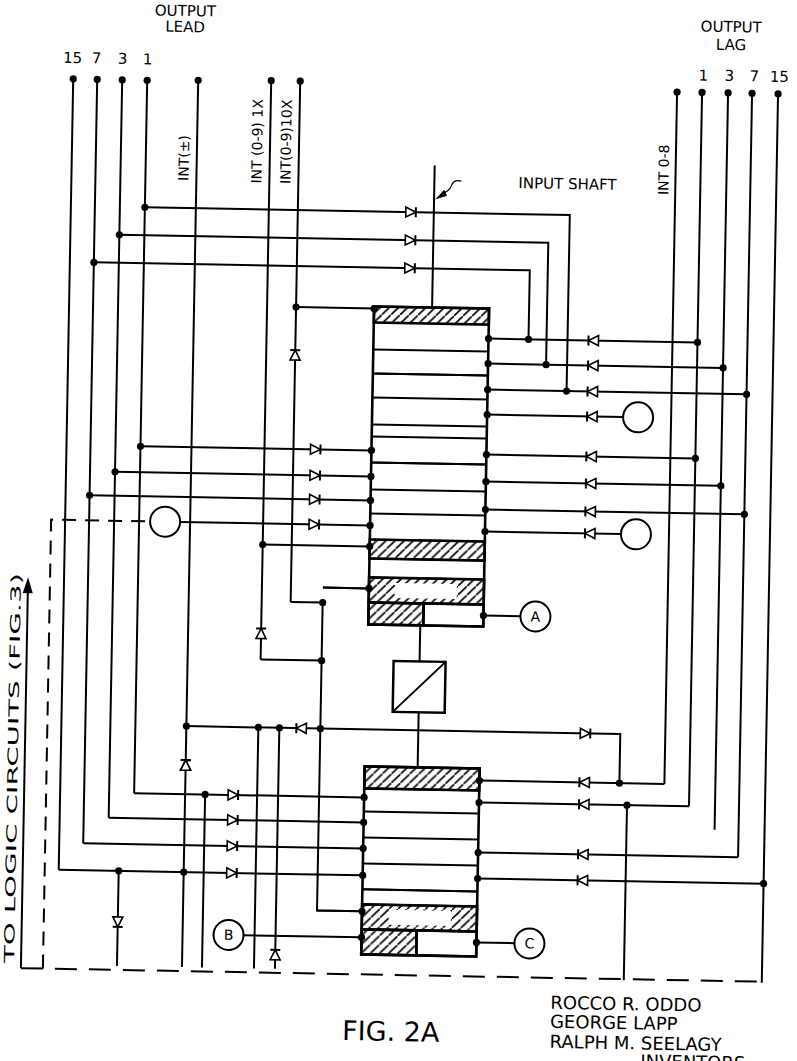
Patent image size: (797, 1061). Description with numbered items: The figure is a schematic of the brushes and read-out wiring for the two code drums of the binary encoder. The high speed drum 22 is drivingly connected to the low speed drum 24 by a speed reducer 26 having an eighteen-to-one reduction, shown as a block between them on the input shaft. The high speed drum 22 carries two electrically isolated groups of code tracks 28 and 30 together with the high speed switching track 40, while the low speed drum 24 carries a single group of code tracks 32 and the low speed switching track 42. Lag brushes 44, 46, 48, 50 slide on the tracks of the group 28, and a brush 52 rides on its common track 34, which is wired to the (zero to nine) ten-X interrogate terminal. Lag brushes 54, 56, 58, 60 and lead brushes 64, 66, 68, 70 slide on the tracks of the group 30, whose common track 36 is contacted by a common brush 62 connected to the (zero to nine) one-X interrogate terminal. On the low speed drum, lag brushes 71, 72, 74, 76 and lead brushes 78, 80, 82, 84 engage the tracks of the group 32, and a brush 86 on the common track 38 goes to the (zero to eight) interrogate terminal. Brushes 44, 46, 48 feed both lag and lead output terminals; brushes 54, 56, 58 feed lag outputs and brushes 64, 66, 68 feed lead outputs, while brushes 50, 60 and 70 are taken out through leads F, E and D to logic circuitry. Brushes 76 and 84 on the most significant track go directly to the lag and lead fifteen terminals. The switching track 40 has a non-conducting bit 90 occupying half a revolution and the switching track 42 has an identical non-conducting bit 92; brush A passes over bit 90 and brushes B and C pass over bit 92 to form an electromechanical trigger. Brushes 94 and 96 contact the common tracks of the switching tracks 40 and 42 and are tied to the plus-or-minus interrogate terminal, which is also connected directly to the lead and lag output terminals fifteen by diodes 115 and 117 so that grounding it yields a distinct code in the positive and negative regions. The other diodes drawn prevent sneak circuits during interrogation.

The high speed drum 22 is at (440, 303).
The low speed drum 24 is at (474, 761).
The speed reducer 26 is at (432, 661).
The group of code tracks 28 is at (362, 386).
The group of code tracks 30 is at (368, 452).
The group of code tracks 32 is at (399, 778).
The common track 34 is at (405, 309).
The common track 36 is at (487, 558).
The common track 38 is at (423, 765).
The high speed switching track 40 is at (394, 632).
The low speed switching track 42 is at (383, 945).
The lag brush 44 is at (487, 339).
The lag brush 46 is at (495, 363).
The lag brush 48 is at (497, 389).
The lag brush 50 is at (500, 414).
The brush 52 is at (359, 310).
The lag brush 54 is at (502, 452).
The lag brush 56 is at (502, 479).
The lag brush 58 is at (502, 506).
The lag output brush 60 is at (502, 530).
The common brush 62 is at (364, 551).
The lead brush 64 is at (357, 452).
The lead brush 66 is at (356, 479).
The lead brush 68 is at (357, 505).
The lead brush 70 is at (361, 529).
The lag brush 71 is at (495, 802).
The lag brush 72 is at (494, 849).
The lag brush 74 is at (494, 876).
The lag brush 76 is at (485, 883).
The lead brush 78 is at (356, 797).
The lead brush 80 is at (362, 825).
The lead brush 82 is at (363, 851).
The lead brush 84 is at (363, 878).
The brush 86 is at (492, 781).
The non-conducting bit 90 is at (474, 624).
The non-conducting bit 92 is at (479, 955).
The brush 94 is at (362, 589).
The brush 96 is at (364, 910).
The diode 115 is at (209, 757).
The diode 117 is at (289, 957).